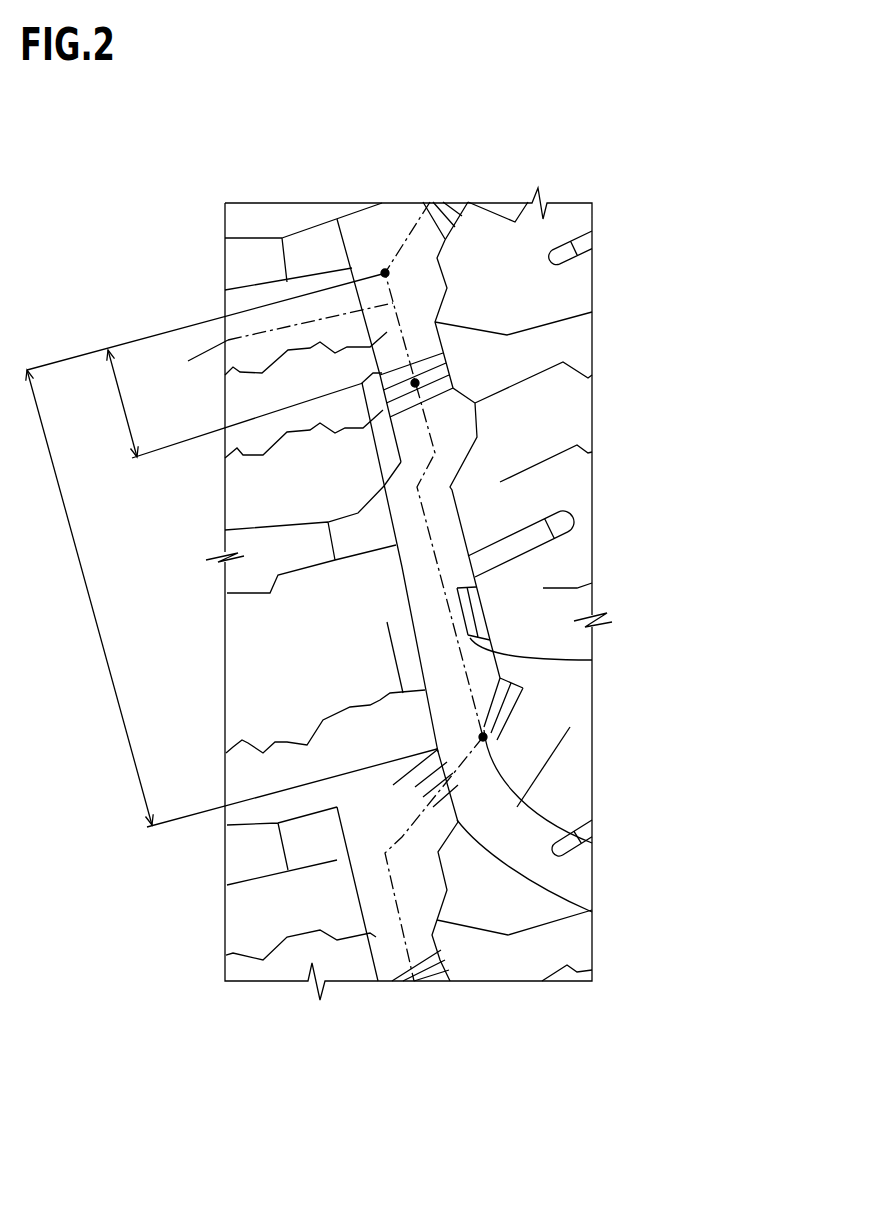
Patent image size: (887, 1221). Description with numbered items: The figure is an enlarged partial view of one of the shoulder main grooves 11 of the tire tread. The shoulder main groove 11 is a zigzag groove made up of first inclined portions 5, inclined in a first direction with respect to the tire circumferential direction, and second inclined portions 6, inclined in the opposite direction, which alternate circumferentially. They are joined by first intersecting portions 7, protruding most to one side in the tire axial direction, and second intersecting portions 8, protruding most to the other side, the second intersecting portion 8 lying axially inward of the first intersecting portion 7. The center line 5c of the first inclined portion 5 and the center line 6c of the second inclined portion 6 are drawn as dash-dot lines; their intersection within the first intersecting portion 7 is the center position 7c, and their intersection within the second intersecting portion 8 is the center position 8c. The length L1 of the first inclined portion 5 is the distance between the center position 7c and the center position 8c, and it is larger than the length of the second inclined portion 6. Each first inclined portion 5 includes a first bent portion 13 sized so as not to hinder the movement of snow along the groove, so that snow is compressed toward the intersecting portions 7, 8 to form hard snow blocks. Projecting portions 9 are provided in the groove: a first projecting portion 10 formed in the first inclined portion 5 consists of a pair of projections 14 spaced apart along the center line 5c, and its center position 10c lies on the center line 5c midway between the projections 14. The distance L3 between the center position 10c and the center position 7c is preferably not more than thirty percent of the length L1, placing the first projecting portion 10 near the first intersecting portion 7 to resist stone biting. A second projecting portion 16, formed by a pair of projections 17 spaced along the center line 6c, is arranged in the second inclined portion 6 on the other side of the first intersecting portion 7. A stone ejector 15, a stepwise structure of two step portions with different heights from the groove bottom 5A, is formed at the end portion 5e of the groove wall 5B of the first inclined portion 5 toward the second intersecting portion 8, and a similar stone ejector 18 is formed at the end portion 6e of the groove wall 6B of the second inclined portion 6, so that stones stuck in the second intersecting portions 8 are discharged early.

The first intersecting portion 7 is at (355, 246).
The center position of first intersecting portion 7c is at (384, 271).
The shoulder main groove 11 is at (400, 218).
The groove wall of second inclined portion 6B is at (441, 239).
The first inclined portion 5 is at (387, 332).
The center line of first inclined portion 5c is at (271, 339).
The end portion of groove wall of first inclined portion 5e is at (460, 613).
The end portion of groove wall of second inclined portion 6e is at (490, 698).
The second inclined portion 6 is at (340, 806).
The center line of second inclined portion 6c is at (407, 777).
The center position of first projecting portion 10c is at (415, 383).
The projection 14 is at (449, 363).
The projecting portion 9 is at (575, 646).
The first projecting portion 10 is at (574, 366).
The second projecting portion 16 is at (581, 865).
The projection 17 is at (592, 913).
The first bent portion 13 is at (447, 455).
The groove wall of first inclined portion 5B is at (440, 513).
The groove bottom of first inclined portion 5A is at (420, 557).
The stone ejector 15 is at (490, 640).
The stone ejector 18 is at (500, 678).
The center position of second intersecting portion 8c is at (483, 737).
The second intersecting portion 8 is at (486, 746).
The length of first inclined portion L1 is at (231, 550).
The distance between first projecting portion and first intersecting portion L3 is at (223, 404).